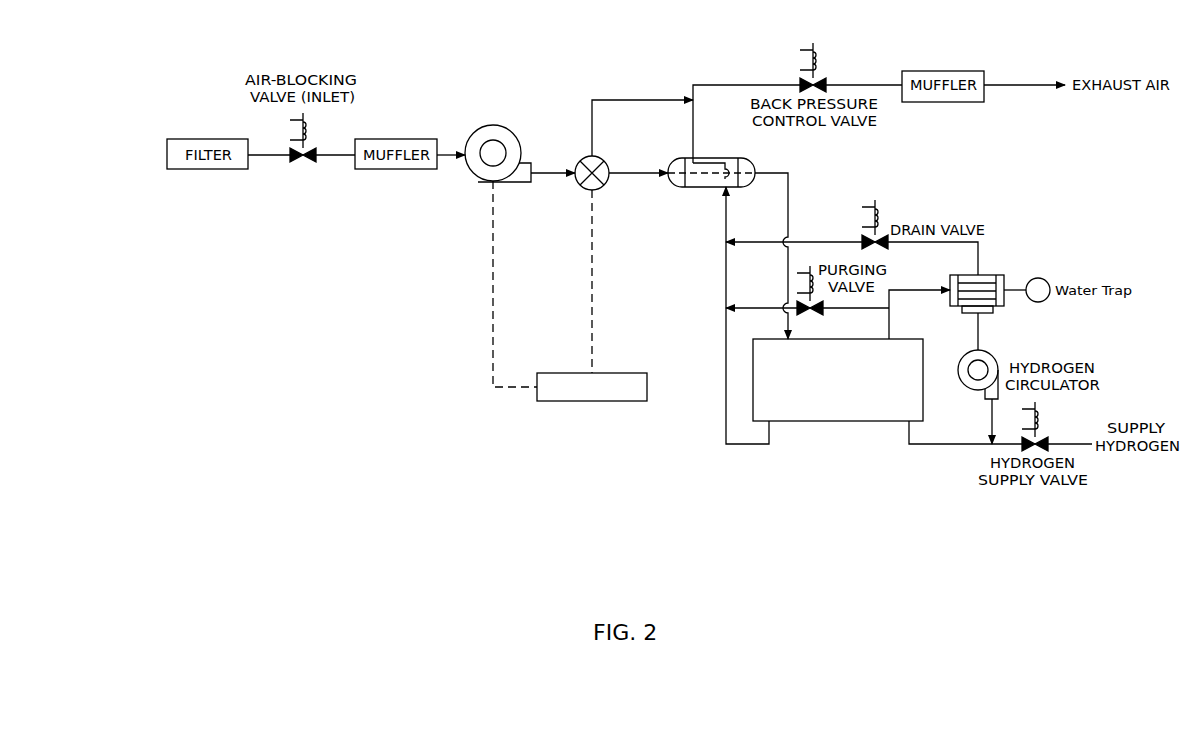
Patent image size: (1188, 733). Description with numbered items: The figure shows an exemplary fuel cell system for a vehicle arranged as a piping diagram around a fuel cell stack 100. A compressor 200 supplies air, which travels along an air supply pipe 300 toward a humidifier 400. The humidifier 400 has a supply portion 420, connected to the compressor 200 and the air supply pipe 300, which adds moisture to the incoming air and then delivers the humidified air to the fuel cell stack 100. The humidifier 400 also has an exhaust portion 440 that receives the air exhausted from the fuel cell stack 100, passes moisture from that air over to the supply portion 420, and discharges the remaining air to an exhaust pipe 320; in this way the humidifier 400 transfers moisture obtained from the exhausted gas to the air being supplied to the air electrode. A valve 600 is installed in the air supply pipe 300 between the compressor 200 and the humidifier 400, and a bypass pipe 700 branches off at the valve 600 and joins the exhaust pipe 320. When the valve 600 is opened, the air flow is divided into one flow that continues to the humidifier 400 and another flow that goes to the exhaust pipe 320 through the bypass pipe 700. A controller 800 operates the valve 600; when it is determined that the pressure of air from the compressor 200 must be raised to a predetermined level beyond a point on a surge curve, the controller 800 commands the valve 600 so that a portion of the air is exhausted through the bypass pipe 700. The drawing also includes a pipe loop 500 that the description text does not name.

The fuel cell stack 100 is at (838, 422).
The compressor 200 is at (470, 181).
The air supply pipe 300 is at (637, 179).
The exhaust pipe 320 is at (730, 85).
The humidifier 400 is at (729, 209).
The supply portion 420 is at (683, 190).
The exhaust portion 440 is at (730, 165).
The cathode exhaust return line 500 is at (745, 445).
The valve 600 is at (581, 184).
The bypass pipe 700 is at (608, 100).
The controller 800 is at (591, 401).